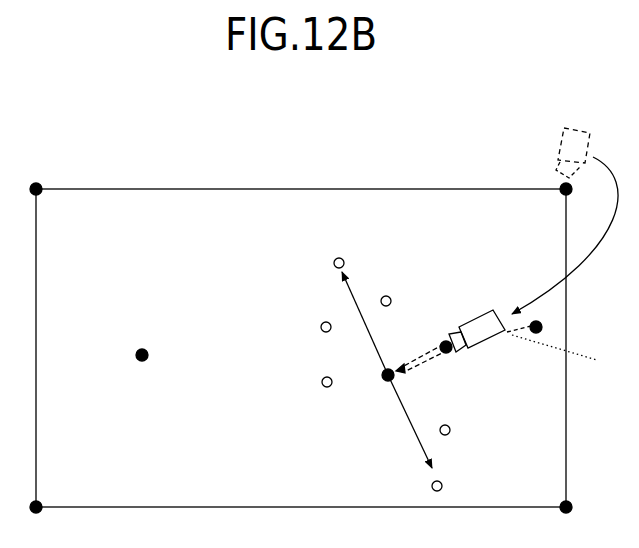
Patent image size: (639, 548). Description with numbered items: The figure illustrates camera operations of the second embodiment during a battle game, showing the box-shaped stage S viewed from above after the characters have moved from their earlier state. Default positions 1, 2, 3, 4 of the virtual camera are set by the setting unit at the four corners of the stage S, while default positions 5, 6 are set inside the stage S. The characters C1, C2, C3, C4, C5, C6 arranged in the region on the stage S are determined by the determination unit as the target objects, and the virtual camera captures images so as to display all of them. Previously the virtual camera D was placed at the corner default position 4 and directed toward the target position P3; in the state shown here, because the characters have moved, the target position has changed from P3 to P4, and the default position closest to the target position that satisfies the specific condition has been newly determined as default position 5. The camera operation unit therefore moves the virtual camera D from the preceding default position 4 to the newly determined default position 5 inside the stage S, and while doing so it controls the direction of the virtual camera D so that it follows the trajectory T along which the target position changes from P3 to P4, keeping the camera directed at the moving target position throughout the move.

The default position 1 is at (25, 190).
The default position 2 is at (25, 509).
The default position 3 is at (577, 509).
The default position 4 is at (577, 191).
The default position 5 is at (464, 349).
The default position 6 is at (132, 355).
The stage S is at (306, 186).
The virtual camera D is at (583, 124).
The trajectory T is at (561, 354).
The target position P3 is at (543, 321).
The target position P4 is at (384, 381).
The character C1 is at (442, 485).
The character C2 is at (323, 377).
The character C3 is at (390, 296).
The character C4 is at (344, 259).
The character C5 is at (322, 322).
The character C6 is at (450, 430).